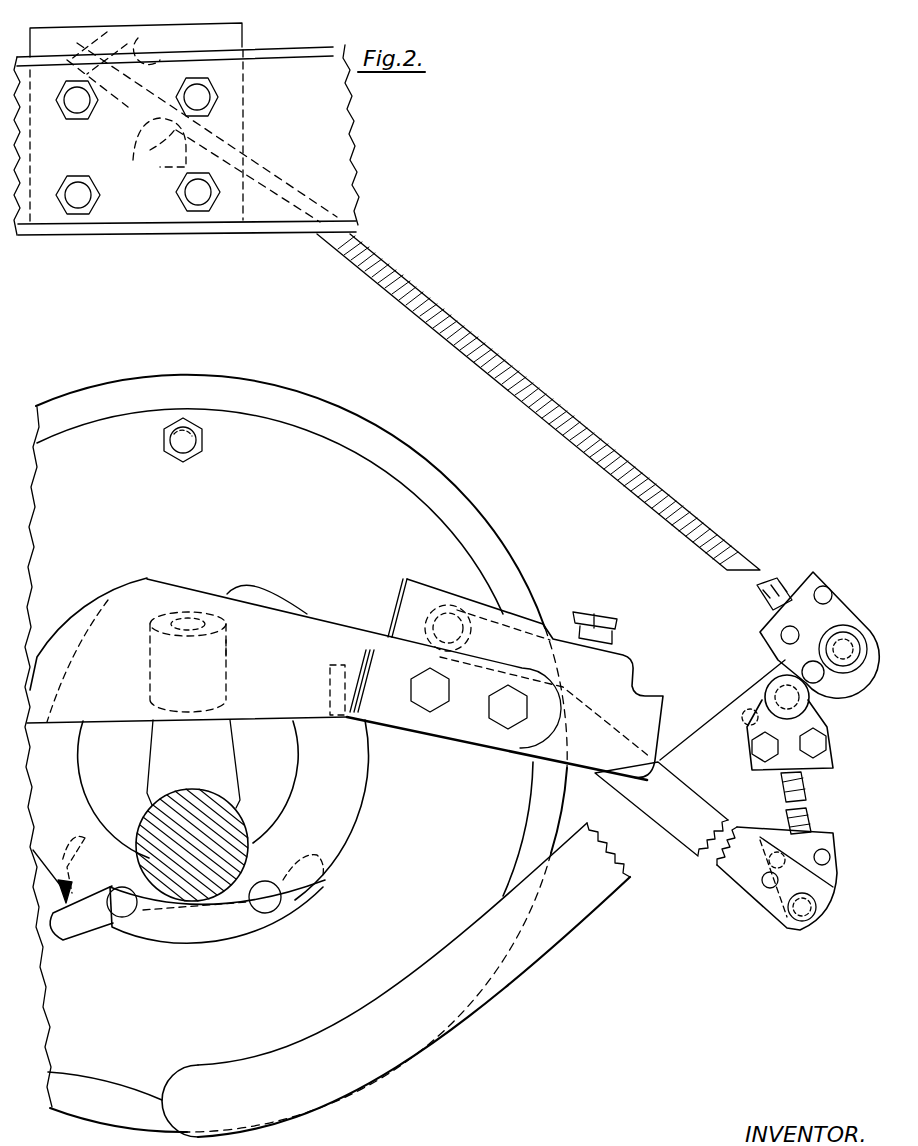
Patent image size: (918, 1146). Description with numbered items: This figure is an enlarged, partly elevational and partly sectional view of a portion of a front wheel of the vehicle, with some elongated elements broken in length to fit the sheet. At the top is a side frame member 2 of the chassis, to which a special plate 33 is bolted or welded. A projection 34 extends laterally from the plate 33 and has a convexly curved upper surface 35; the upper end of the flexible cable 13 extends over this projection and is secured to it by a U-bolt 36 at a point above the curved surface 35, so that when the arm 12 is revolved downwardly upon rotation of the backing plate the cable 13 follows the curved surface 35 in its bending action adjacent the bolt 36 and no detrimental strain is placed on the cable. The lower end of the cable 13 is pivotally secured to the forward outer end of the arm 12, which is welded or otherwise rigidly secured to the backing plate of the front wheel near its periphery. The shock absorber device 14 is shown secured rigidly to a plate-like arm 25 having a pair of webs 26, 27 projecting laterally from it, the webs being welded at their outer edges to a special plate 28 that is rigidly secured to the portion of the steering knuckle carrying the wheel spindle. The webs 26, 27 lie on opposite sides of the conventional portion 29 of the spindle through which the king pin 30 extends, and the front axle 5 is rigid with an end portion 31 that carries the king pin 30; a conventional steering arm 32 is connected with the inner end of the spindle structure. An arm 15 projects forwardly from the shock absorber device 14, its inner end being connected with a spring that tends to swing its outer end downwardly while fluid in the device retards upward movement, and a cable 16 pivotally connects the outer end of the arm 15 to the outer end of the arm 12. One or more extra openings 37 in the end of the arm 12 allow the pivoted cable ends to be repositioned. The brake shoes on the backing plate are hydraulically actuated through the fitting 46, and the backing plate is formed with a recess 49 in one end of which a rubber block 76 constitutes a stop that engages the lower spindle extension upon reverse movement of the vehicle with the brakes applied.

The side frame member 2 is at (133, 217).
The front axle 5 is at (240, 857).
The arm 12 is at (577, 913).
The flexible cable 13 is at (733, 558).
The shock absorber device 14 is at (522, 618).
The arm 15 is at (685, 828).
The cable 16 is at (803, 788).
The plate-like arm 25 is at (348, 633).
The web 26 is at (79, 661).
The web 27 is at (330, 693).
The special plate 28 is at (363, 772).
The portion of the spindle 29 is at (230, 650).
The king pin 30 is at (200, 613).
The end portion 31 is at (230, 727).
The steering arm 32 is at (82, 927).
The special plate 33 is at (240, 34).
The projection 34 is at (152, 155).
The convexly curved upper surface 35 is at (238, 130).
The U-bolt 36 is at (158, 42).
The extra opening 37 is at (750, 713).
The fitting 46 is at (203, 443).
The recess 49 is at (233, 933).
The rubber block 76 is at (67, 863).